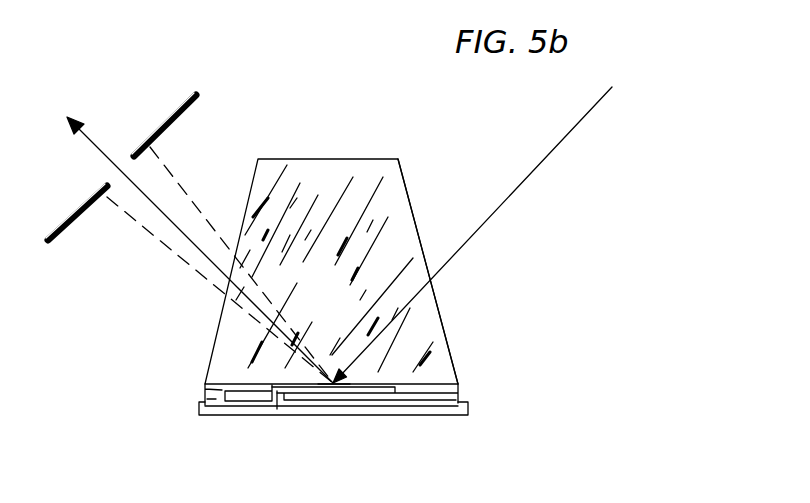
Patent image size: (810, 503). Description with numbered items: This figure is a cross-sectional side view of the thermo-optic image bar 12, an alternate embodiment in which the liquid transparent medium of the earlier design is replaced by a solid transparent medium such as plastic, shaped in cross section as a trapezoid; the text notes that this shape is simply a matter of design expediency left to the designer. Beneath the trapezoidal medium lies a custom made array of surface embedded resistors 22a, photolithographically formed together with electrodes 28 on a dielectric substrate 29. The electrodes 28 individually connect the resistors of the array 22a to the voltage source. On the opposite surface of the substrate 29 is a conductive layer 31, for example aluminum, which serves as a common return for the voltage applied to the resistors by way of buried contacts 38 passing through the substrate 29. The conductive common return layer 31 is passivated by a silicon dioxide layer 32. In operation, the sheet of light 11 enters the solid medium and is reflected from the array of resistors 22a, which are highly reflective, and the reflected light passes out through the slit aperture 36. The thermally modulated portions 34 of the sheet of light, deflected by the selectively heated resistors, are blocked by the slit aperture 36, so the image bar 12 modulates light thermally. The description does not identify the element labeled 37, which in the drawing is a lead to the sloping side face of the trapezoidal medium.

The sheet of light 11 is at (510, 197).
The thermo-optic image bar 12 is at (343, 143).
The resistor array 22a is at (302, 383).
The electrodes 28 is at (435, 383).
The dielectric substrate 29 is at (205, 389).
The conductive layer 31 is at (226, 414).
The silicon dioxide layer 32 is at (406, 413).
The thermally modulated portions 34 is at (167, 247).
The slit aperture 36 is at (169, 112).
The side face of prism 37 is at (410, 201).
The buried contacts 38 is at (277, 412).